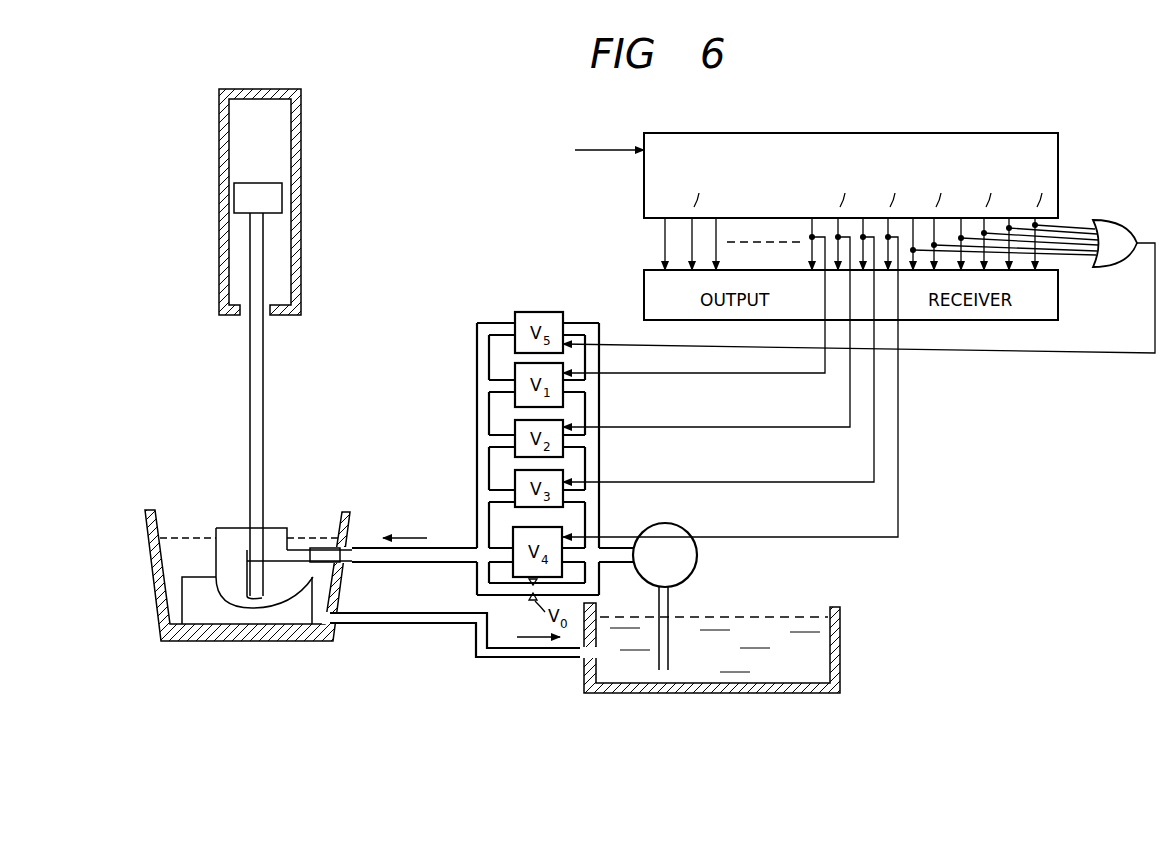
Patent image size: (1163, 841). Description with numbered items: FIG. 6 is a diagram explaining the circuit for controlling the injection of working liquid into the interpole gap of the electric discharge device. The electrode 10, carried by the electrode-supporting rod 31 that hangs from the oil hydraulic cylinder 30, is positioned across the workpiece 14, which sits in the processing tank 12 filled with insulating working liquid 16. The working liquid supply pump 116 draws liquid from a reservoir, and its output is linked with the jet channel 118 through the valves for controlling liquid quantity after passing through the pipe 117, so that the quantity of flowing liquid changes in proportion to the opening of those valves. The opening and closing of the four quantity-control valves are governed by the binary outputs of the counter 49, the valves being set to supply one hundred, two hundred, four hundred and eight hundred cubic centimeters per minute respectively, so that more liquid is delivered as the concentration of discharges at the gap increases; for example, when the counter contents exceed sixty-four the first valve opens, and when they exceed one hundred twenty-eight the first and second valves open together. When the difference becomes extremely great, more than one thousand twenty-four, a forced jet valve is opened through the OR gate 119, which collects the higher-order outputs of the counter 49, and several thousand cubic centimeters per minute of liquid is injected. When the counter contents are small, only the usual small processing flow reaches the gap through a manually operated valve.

The oil hydraulic cylinder 30 is at (300, 120).
The electrode-supporting rod 31 is at (265, 393).
The electrode 10 is at (228, 527).
The processing tank 12 is at (347, 518).
The workpiece 14 is at (312, 598).
The insulating working liquid 16 is at (186, 540).
The jet channel 118 is at (270, 545).
The pipe 117 is at (444, 548).
The working liquid supply pump 116 is at (698, 555).
The OR gate 119 is at (1118, 231).
The counter 49 is at (945, 133).